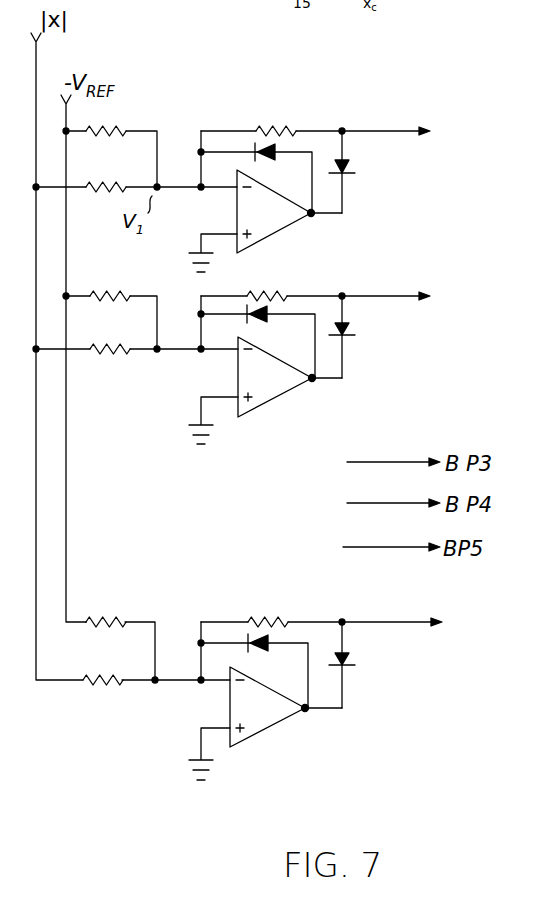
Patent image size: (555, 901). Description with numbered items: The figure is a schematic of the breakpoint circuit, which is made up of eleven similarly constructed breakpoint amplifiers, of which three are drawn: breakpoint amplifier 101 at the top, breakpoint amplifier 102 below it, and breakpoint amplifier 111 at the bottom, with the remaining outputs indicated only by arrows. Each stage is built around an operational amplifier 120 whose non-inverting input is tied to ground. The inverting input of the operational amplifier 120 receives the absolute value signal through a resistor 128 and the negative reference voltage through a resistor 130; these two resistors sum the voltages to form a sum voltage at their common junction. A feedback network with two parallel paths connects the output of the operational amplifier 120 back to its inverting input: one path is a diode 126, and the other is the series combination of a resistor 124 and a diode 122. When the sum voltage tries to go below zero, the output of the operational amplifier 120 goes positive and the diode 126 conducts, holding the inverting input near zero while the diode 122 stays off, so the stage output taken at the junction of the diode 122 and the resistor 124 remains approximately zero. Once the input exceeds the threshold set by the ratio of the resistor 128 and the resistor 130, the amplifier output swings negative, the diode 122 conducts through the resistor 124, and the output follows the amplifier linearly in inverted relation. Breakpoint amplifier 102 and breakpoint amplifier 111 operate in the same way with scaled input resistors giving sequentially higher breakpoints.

The breakpoint amplifier 101 is at (270, 180).
The breakpoint amplifier 102 is at (420, 357).
The breakpoint amplifier 111 is at (408, 690).
The operational amplifier 120 is at (281, 220).
The diode 122 is at (352, 162).
The resistor 124 is at (278, 129).
The diode 126 is at (254, 147).
The resistor 128 is at (87, 186).
The resistor 130 is at (128, 126).